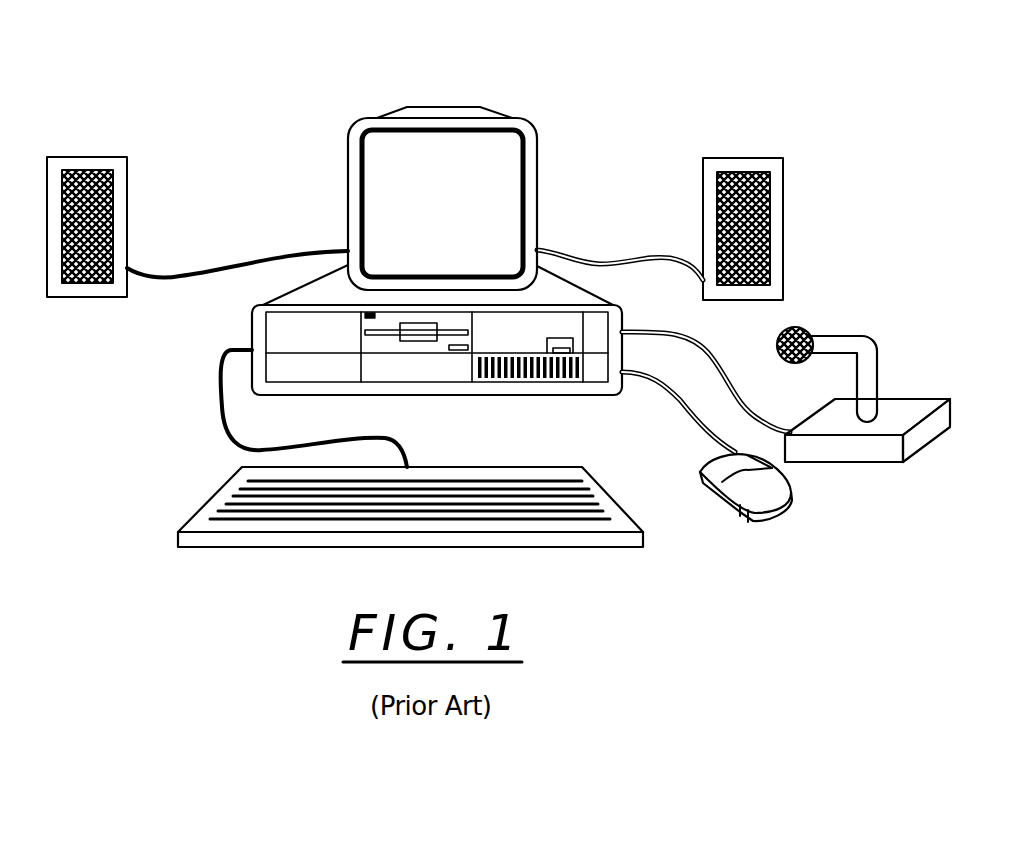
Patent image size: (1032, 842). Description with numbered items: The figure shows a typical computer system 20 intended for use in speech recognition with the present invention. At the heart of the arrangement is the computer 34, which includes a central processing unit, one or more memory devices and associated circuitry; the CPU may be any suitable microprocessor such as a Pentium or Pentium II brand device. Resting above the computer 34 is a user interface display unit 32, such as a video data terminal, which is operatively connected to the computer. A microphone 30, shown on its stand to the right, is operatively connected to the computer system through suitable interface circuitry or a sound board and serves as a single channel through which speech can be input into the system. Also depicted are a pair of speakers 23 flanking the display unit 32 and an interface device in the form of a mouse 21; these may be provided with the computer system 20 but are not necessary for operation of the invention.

The computer system 20 is at (281, 92).
The mouse 21 is at (767, 527).
The speakers 23 is at (91, 157).
The microphone 30 is at (870, 462).
The user interface display unit 32 is at (537, 173).
The computer 34 is at (555, 280).